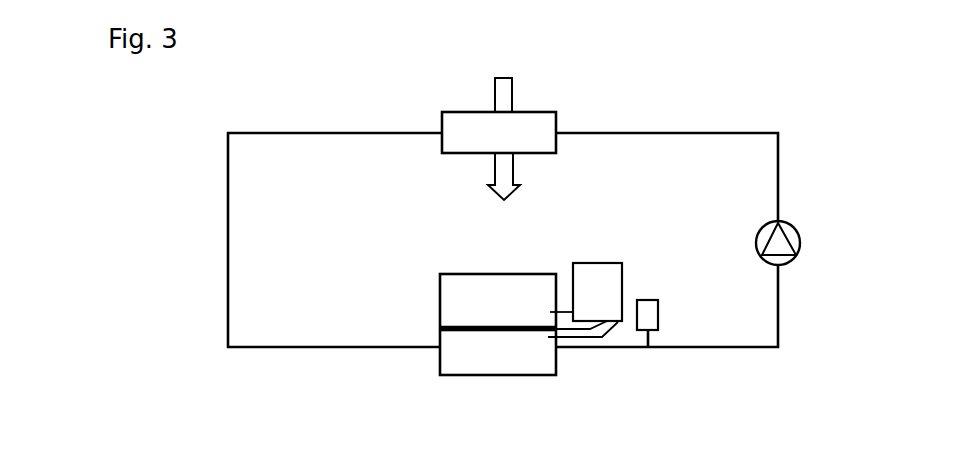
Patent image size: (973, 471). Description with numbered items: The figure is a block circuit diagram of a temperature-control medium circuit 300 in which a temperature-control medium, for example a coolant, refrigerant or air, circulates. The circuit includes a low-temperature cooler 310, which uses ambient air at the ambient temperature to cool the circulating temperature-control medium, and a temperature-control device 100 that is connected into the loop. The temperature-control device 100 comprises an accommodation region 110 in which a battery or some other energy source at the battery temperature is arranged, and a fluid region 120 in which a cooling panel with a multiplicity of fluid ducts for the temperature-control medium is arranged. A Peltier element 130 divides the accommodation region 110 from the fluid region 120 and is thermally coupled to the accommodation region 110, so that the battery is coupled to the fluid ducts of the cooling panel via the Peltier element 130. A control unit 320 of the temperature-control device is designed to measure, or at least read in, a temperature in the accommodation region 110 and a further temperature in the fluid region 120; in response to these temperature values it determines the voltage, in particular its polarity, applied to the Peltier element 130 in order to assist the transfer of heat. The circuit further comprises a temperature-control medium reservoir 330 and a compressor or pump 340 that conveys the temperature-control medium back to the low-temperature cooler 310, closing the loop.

The temperature-control medium circuit 300 is at (810, 142).
The low-temperature cooler 310 is at (535, 123).
The control unit 320 is at (607, 272).
The temperature-control medium reservoir 330 is at (657, 317).
The pump 340 is at (800, 238).
The temperature-control device 100 is at (444, 299).
The accommodation region 110 is at (512, 290).
The fluid region 120 is at (498, 352).
The Peltier element 130 is at (440, 328).